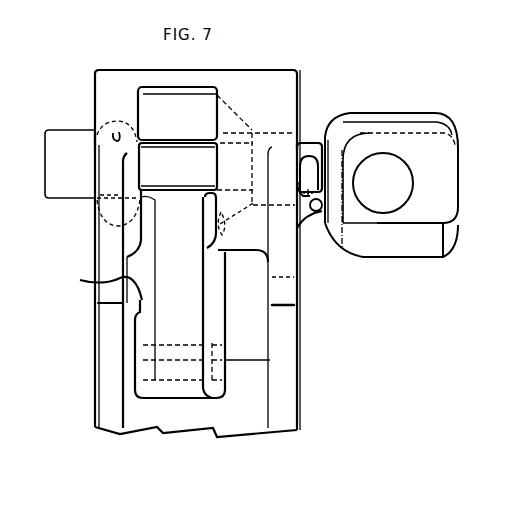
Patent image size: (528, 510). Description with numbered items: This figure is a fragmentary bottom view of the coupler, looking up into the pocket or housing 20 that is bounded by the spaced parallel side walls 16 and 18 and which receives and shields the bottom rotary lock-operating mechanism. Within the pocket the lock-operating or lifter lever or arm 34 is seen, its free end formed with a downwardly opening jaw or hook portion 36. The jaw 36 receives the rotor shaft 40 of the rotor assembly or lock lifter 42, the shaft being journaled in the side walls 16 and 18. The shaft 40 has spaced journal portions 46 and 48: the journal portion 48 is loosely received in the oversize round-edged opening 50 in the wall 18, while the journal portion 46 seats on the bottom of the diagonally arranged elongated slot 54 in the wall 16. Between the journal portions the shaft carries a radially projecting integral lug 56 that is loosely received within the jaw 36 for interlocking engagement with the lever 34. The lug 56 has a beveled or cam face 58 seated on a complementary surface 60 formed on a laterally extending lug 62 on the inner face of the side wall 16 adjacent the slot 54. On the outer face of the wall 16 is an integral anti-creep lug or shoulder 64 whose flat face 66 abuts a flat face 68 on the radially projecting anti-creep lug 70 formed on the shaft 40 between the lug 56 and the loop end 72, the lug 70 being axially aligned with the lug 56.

The side wall 16 is at (285, 382).
The side wall 18 is at (112, 393).
The pocket or housing 20 is at (101, 280).
The lock-operating or lifter lever or arm 34 is at (198, 294).
The jaw or hook portion 36 is at (177, 113).
The rotor shaft 40 is at (50, 142).
The rotor assembly or lock lifter 42 is at (443, 133).
The journal portion 46 is at (297, 139).
The journal portion 48 is at (93, 142).
The oversize round-edged opening 50 is at (118, 130).
The elongated slot 54 is at (283, 269).
The lug 56 is at (178, 166).
The beveled or cam face 58 is at (208, 250).
The complementary surface 60 is at (243, 287).
The laterally extending lug 62 is at (236, 221).
The anti-creep lug or shoulder 64 is at (322, 210).
The flat face 66 is at (298, 188).
The flat face 68 is at (300, 170).
The anti-creep lug 70 is at (297, 146).
The loop end 72 is at (399, 178).